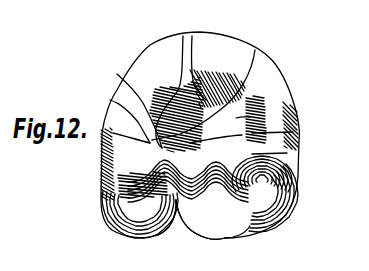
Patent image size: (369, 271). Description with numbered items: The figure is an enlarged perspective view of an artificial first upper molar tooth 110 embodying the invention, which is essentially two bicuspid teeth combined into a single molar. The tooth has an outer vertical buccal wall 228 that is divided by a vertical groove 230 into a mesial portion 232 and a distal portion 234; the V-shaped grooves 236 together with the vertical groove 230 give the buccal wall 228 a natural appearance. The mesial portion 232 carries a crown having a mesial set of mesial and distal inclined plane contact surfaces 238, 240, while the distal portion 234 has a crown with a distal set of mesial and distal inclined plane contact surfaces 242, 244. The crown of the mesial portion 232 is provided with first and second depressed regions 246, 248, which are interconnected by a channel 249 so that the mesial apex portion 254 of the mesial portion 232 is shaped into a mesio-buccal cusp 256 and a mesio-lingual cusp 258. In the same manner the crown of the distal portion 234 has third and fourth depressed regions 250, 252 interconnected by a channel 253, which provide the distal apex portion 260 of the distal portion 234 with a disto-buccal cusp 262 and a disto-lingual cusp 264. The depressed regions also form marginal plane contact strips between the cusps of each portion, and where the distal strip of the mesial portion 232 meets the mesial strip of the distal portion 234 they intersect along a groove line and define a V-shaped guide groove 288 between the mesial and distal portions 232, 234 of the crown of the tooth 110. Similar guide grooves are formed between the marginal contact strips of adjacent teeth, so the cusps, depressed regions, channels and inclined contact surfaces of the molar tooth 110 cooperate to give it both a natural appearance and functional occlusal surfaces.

The first upper molar tooth 110 is at (293, 100).
The outer vertical buccal wall 228 is at (269, 87).
The vertical groove 230 is at (255, 50).
The V-shaped grooves 236 is at (192, 36).
The mesio-buccal cusp 256 is at (117, 74).
The mesial apex portion 254 is at (110, 100).
The mesial portion 232 is at (113, 133).
The distal portion 234 is at (250, 117).
The distal apex portion 260 is at (293, 132).
The disto-buccal cusp 262 is at (287, 153).
The channel 253 is at (284, 182).
The depressed region 252 is at (290, 200).
The depressed region 250 is at (282, 215).
The distal inclined plane contact surface 244 is at (272, 222).
The disto-lingual cusp 264 is at (275, 224).
The channel 249 is at (143, 187).
The first depressed region 246 is at (105, 198).
The mesial inclined plane contact surface 238 is at (107, 208).
The mesio-lingual cusp 258 is at (125, 223).
The distal inclined plane contact surface 240 is at (160, 232).
The second depressed region 248 is at (186, 217).
The V-shaped guide groove 288 is at (200, 226).
The mesial inclined plane contact surface 242 is at (228, 230).